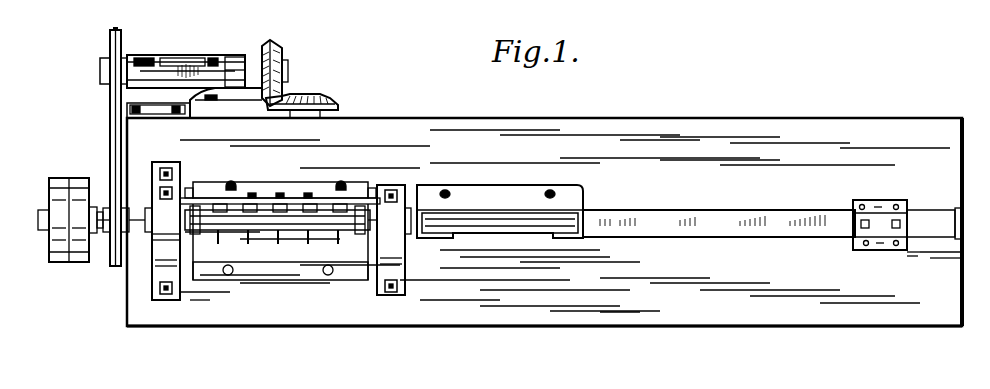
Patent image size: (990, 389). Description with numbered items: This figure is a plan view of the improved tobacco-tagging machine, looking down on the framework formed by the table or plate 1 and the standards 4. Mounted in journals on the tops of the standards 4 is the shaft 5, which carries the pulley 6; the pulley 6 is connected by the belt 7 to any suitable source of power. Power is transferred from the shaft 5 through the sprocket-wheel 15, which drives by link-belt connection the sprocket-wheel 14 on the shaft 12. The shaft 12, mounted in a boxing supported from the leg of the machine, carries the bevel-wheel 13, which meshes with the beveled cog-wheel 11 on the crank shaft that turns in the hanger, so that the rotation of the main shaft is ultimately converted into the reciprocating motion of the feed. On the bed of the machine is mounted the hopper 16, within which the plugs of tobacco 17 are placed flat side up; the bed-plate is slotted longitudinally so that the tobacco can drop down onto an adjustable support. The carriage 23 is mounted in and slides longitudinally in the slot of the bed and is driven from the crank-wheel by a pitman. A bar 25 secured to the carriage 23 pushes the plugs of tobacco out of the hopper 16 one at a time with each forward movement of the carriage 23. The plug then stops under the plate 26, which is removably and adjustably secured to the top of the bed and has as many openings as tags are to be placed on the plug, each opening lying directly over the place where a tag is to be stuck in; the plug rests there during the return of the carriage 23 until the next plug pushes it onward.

The table or plate 1 is at (172, 316).
The standards 4 is at (162, 208).
The shaft 5 is at (265, 212).
The pulley 6 is at (70, 186).
The belt 7 is at (880, 128).
The beveled cog-wheel 11 is at (335, 106).
The shaft 12 is at (290, 70).
The bevel-wheel 13 is at (276, 46).
The sprocket-wheel 14 is at (108, 45).
The sprocket-wheel 15 is at (107, 262).
The hopper 16 is at (481, 216).
The plugs of tobacco 17 is at (506, 228).
The carriage 23 is at (888, 196).
The bar 25 is at (754, 226).
The plate 26 is at (276, 186).